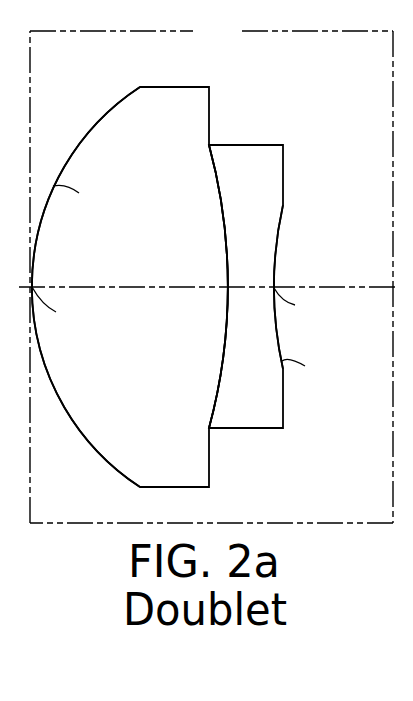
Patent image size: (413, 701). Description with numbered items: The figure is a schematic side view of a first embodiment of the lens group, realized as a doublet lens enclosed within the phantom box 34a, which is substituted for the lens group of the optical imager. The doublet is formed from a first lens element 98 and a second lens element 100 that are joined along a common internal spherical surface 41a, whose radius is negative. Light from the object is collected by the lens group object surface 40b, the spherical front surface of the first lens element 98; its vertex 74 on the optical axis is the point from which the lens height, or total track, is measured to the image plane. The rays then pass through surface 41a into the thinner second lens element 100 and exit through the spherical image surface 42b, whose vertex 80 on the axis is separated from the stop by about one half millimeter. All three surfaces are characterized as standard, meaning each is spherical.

The phantom box 34a is at (211, 264).
The lens group object surface 40b is at (122, 101).
The surface 41a is at (228, 247).
The surface 42b is at (277, 247).
The object surface vertex 74 is at (32, 287).
The vertex 80 is at (274, 288).
The first lens element 98 is at (171, 439).
The second lens element 100 is at (269, 423).